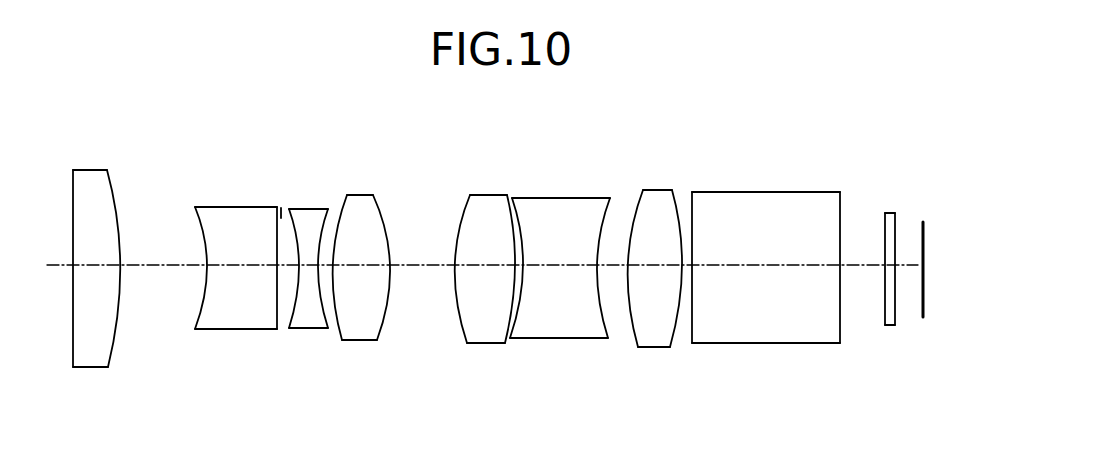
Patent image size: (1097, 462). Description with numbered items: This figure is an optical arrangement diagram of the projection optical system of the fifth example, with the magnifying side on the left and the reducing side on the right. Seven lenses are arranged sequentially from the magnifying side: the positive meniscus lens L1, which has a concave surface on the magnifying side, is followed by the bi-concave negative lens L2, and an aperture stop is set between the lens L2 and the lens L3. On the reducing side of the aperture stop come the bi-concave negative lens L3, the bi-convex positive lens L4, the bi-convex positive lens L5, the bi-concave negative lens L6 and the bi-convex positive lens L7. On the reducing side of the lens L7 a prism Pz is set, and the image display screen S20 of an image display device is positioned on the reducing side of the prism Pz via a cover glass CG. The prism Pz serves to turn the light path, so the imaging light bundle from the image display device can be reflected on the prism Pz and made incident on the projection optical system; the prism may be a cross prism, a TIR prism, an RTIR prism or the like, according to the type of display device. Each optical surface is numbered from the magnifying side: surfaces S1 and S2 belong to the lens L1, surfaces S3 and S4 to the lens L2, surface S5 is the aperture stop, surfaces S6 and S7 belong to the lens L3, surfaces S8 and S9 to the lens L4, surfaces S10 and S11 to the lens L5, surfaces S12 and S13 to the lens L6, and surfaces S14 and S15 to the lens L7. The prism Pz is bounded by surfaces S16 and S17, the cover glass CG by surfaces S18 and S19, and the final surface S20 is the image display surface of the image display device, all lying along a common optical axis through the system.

The positive meniscus lens L1 is at (87, 264).
The bi-concave negative lens L2 is at (225, 254).
The bi-concave negative lens L3 is at (295, 264).
The bi-convex positive lens L4 is at (358, 273).
The bi-convex positive lens L5 is at (472, 263).
The bi-concave negative lens L6 is at (562, 263).
The bi-convex positive lens L7 is at (641, 264).
The prism Pz is at (766, 255).
The cover glass CG is at (882, 254).
The first surface S1 is at (72, 343).
The second surface S2 is at (110, 355).
The third surface S3 is at (197, 313).
The fourth surface S4 is at (277, 330).
The fifth surface (aperture stop) S5 is at (280, 199).
The sixth surface S6 is at (281, 317).
The seventh surface S7 is at (328, 330).
The eighth surface S8 is at (341, 342).
The ninth surface S9 is at (377, 343).
The tenth surface S10 is at (463, 328).
The eleventh surface S11 is at (502, 344).
The twelfth surface S12 is at (510, 340).
The thirteenth surface S13 is at (612, 333).
The fourteenth surface S14 is at (638, 348).
The fifteenth surface S15 is at (670, 348).
The sixteenth surface S16 is at (692, 344).
The seventeenth surface S17 is at (840, 344).
The eighteenth surface S18 is at (885, 312).
The nineteenth surface S19 is at (895, 315).
The image display surface S20 is at (928, 322).